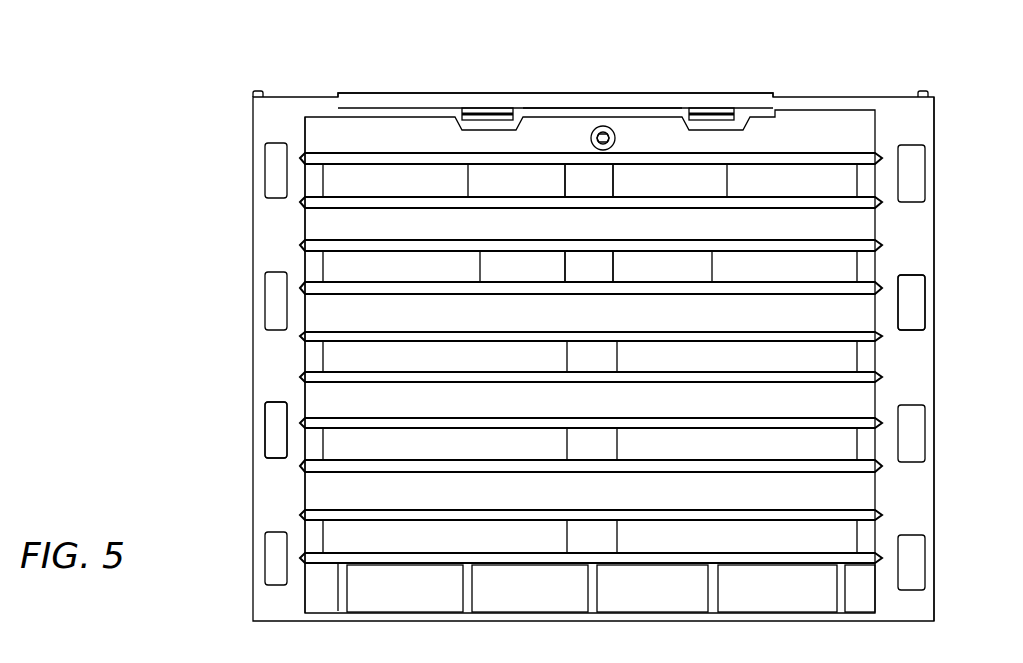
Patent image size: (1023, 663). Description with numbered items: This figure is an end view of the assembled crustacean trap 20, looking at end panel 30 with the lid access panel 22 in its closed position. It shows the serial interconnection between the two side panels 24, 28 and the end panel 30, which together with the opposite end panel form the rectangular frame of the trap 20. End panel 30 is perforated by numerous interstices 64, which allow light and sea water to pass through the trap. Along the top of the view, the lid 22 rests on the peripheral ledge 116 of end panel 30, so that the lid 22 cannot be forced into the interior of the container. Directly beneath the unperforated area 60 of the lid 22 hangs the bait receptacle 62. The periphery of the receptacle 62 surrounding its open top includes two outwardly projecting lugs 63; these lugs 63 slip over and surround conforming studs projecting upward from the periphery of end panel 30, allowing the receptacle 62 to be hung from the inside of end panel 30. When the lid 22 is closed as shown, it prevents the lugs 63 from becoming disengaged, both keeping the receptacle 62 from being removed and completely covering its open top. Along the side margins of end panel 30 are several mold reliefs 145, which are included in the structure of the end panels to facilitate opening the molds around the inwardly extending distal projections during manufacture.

The crustacean trap 20 is at (705, 50).
The lid access panel 22 is at (392, 93).
The side panel 24 is at (925, 282).
The side panel 28 is at (262, 430).
The end panel 30 is at (935, 143).
The unperforated area 60 is at (553, 93).
The bait receptacle 62 is at (735, 181).
The lugs 63 is at (483, 116).
The interstices 64 is at (464, 455).
The ledge 116 is at (618, 115).
The mold relief 145 is at (262, 163).